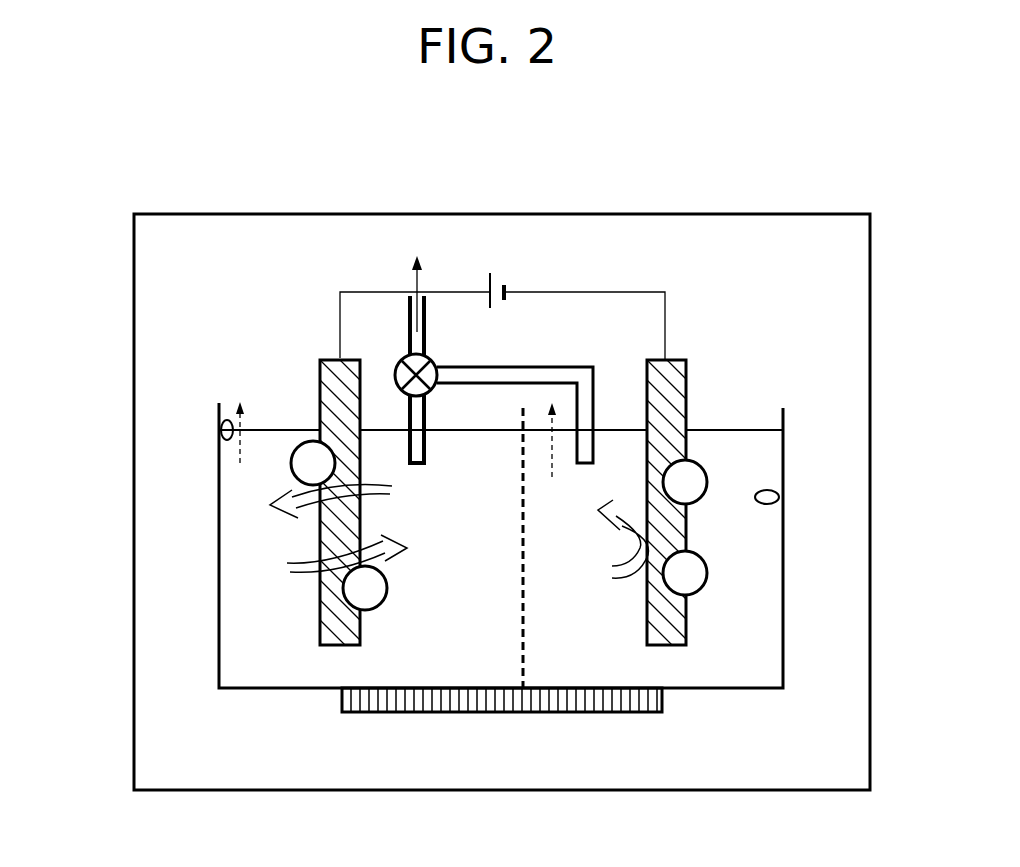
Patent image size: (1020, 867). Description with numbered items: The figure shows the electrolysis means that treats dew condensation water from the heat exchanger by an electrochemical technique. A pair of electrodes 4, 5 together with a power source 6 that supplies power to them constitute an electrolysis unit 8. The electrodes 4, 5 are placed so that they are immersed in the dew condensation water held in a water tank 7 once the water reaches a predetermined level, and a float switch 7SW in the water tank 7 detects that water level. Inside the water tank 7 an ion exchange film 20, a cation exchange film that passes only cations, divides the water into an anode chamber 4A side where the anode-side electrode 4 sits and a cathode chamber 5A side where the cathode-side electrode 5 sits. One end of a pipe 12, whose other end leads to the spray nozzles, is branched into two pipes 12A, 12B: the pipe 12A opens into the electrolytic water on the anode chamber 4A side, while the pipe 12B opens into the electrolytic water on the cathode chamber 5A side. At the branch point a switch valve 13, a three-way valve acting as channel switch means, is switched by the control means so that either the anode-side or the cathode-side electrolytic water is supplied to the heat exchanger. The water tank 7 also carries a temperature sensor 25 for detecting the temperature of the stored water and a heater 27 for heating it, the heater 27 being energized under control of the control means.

The electrolysis unit 8 is at (777, 212).
The water tank 7 is at (278, 690).
The heater 27 is at (565, 713).
The ion exchange film 20 is at (523, 660).
The anode-side electrode 4 is at (320, 368).
The cathode-side electrode 5 is at (675, 361).
The power source 6 is at (495, 273).
The pipe 12 is at (408, 318).
The switch valve 13 is at (466, 349).
The pipe 12B is at (558, 366).
The pipe 12A is at (415, 465).
The float switch 7SW is at (221, 431).
The temperature sensor 25 is at (779, 496).
The anode chamber 4A is at (489, 567).
The cathode chamber 5A is at (758, 565).